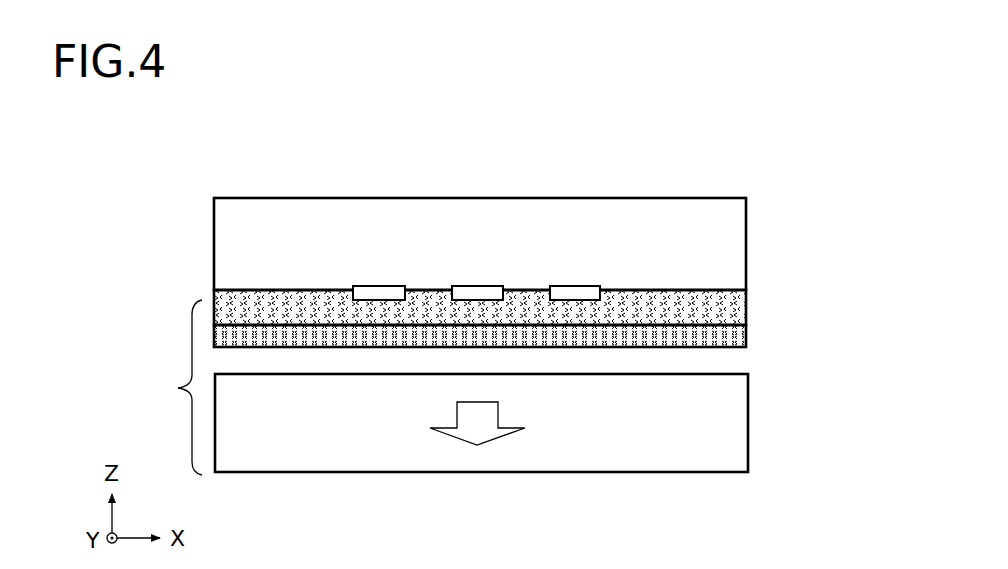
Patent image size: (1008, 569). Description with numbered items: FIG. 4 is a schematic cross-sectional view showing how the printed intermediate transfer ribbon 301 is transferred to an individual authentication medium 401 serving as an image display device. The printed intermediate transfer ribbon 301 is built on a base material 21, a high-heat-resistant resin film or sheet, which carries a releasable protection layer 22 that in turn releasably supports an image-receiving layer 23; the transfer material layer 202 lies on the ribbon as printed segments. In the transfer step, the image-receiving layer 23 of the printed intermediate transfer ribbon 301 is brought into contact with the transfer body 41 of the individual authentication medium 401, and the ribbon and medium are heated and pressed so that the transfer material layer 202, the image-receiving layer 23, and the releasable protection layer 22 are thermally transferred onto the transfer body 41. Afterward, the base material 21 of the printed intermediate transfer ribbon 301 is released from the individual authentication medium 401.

The individual authentication medium 401 is at (412, 182).
The transfer body 41 is at (720, 208).
The image-receiving layer 23 is at (733, 313).
The releasable protection layer 22 is at (735, 338).
The base material 21 is at (733, 453).
The transfer material layer 202 is at (355, 282).
The printed intermediate transfer ribbon 301 is at (155, 387).